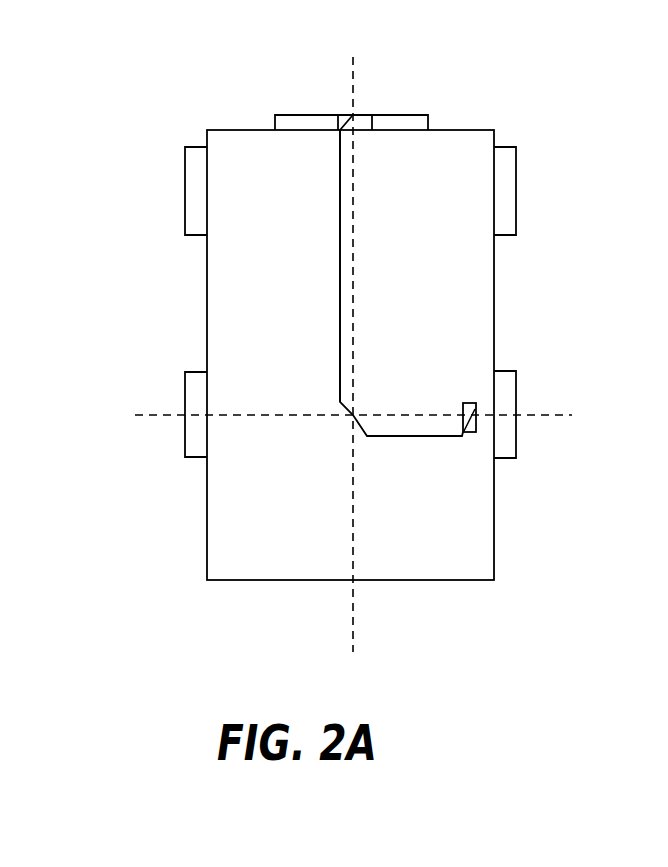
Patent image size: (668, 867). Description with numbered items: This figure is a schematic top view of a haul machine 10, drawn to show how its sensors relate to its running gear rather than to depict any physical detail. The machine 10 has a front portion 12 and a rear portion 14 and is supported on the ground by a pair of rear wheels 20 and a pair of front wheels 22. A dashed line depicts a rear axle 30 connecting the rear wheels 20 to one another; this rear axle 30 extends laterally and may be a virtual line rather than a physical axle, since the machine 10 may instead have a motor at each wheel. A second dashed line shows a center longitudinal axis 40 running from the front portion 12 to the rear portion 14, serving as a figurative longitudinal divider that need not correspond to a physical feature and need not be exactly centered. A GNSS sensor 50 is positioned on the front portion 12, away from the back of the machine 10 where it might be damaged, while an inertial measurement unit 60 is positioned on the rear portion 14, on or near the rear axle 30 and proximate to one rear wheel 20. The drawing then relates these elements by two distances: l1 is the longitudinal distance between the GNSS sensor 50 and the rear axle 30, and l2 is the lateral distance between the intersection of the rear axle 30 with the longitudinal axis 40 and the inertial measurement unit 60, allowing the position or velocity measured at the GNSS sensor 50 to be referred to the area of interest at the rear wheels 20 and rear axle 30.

The haul machine 10 is at (567, 165).
The front portion 12 is at (442, 110).
The rear portion 14 is at (528, 524).
The rear wheels 20 is at (185, 390).
The front wheels 22 is at (185, 168).
The rear axle 30 is at (264, 416).
The center longitudinal axis 40 is at (353, 510).
The GNSS sensor 50 is at (352, 115).
The inertial measurement unit 60 is at (468, 403).
The longitudinal distance l1 is at (340, 258).
The lateral distance l2 is at (421, 437).